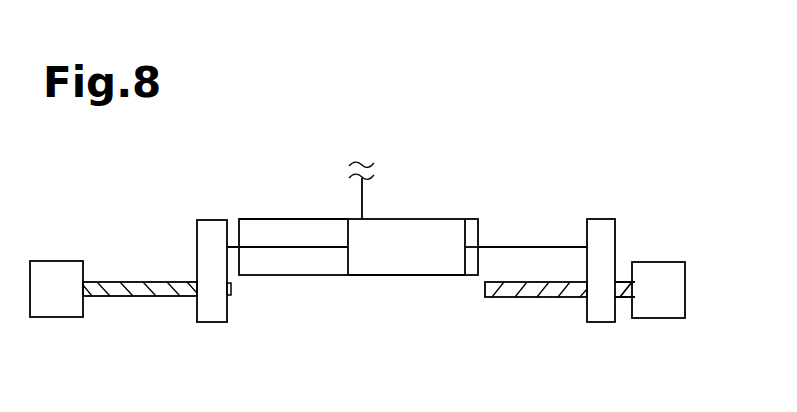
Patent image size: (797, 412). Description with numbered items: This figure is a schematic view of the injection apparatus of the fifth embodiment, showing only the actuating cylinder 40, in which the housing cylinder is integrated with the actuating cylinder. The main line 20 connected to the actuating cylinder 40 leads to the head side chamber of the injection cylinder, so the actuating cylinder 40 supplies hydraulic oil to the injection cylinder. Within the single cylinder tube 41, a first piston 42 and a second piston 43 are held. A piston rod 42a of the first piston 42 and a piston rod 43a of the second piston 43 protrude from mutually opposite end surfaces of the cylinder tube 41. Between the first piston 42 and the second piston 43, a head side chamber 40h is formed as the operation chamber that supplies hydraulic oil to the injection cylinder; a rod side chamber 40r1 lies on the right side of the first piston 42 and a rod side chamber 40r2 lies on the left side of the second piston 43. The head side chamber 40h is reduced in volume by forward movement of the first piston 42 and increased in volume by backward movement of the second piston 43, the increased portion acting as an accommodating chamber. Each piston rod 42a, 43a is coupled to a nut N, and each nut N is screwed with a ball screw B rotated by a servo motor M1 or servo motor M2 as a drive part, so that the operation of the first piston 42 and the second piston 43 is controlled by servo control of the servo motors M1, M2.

The actuating cylinder 40 is at (371, 230).
The cylinder tube 41 is at (313, 219).
The first piston 42 is at (464, 260).
The second piston 43 is at (346, 259).
The main line 20 is at (363, 200).
The rod side chamber 40r1 is at (470, 225).
The rod side chamber 40r2 is at (270, 268).
The head side chamber 40h is at (383, 268).
The piston rod 42a is at (532, 247).
The piston rod 43a is at (265, 247).
The nut N is at (208, 220).
The servo motor M1 is at (655, 262).
The servo motor M2 is at (55, 261).
The ball screw B is at (144, 297).